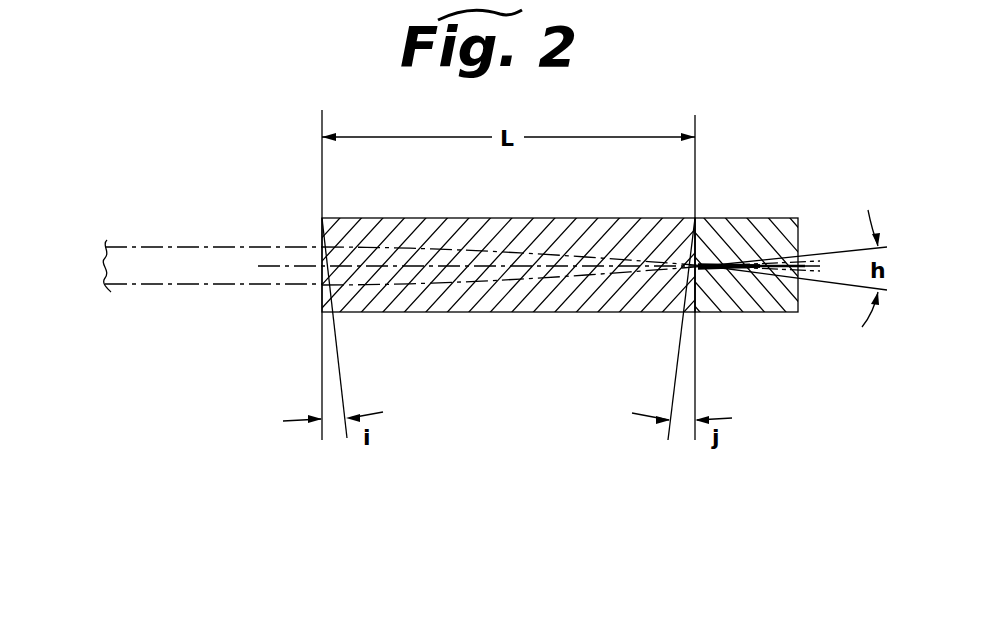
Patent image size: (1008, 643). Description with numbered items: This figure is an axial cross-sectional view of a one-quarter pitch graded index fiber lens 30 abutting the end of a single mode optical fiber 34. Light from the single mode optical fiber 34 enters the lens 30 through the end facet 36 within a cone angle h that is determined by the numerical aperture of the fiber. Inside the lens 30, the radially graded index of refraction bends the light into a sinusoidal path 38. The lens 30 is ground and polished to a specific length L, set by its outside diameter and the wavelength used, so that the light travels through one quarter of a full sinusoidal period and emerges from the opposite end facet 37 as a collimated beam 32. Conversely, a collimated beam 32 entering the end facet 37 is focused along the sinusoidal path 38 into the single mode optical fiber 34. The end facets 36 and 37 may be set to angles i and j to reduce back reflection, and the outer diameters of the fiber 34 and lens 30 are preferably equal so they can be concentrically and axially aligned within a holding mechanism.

The graded index fiber lens 30 is at (322, 229).
The collimated beam 32 is at (160, 247).
The single mode optical fiber 34 is at (737, 262).
The end facet 36 is at (710, 262).
The end facet 37 is at (322, 296).
The sinusoidal path 38 is at (453, 285).